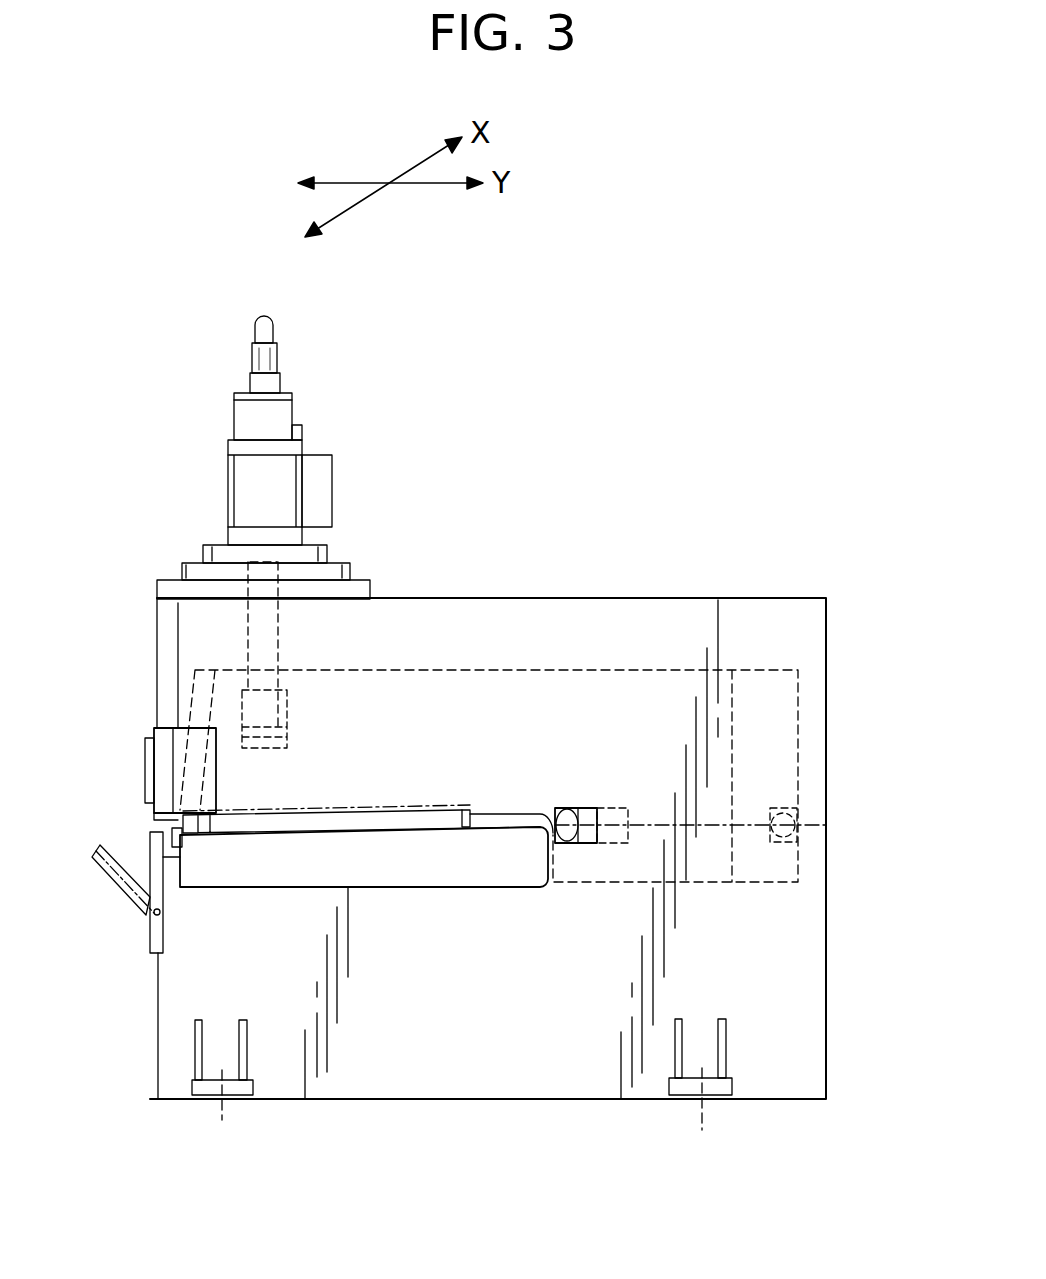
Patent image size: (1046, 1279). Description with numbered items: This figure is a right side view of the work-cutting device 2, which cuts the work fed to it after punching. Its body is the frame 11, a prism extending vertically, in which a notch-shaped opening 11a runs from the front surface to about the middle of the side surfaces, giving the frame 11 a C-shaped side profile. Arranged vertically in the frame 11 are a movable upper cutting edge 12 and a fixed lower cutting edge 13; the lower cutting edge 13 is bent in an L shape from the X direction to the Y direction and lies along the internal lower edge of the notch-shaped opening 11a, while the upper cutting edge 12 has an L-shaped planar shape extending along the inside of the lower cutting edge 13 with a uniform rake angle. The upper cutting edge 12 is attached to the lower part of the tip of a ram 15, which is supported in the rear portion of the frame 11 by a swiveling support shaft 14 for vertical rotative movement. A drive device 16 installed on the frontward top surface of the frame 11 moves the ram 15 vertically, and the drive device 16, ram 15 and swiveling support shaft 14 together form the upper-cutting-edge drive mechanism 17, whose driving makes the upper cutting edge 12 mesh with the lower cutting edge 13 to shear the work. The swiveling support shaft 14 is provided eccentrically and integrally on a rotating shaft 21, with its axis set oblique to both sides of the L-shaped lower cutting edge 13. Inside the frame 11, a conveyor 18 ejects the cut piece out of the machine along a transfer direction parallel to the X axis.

The work-cutting device 2 is at (672, 368).
The frame 11 is at (740, 597).
The notch-shaped opening 11a is at (372, 887).
The upper cutting edge 12 is at (178, 817).
The lower cutting edge 13 is at (172, 838).
The swiveling support shaft 14 is at (648, 825).
The ram 15 is at (522, 670).
The drive device 16 is at (293, 492).
The upper-cutting-edge drive mechanism 17 is at (610, 482).
The conveyor 18 is at (403, 806).
The rotating shaft 21 is at (570, 843).